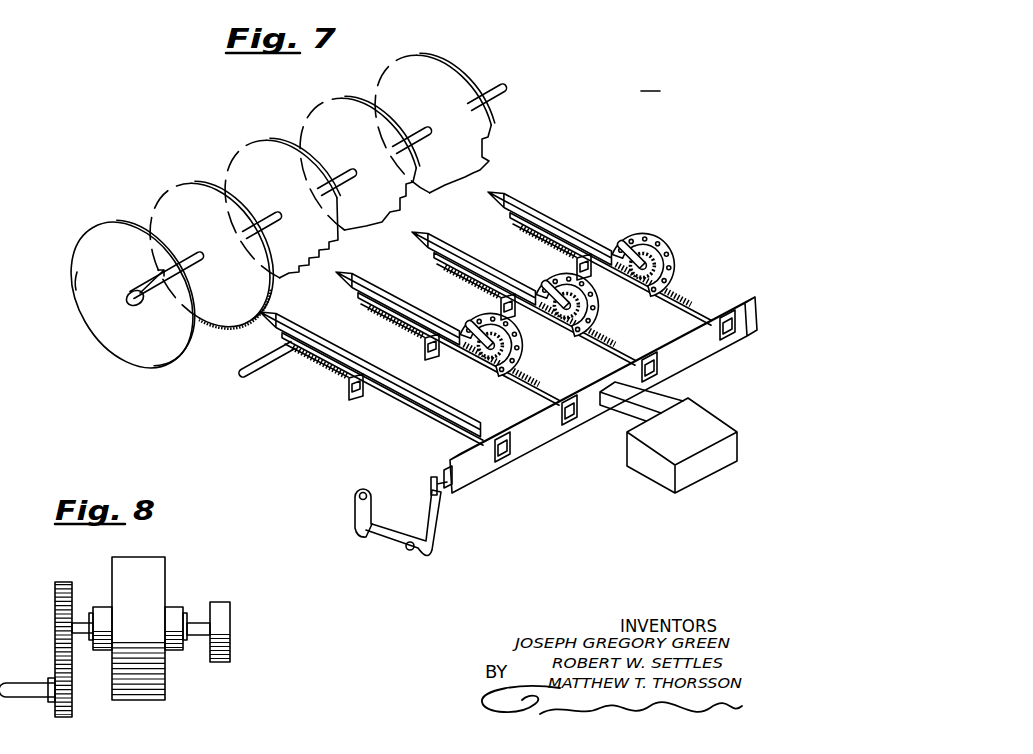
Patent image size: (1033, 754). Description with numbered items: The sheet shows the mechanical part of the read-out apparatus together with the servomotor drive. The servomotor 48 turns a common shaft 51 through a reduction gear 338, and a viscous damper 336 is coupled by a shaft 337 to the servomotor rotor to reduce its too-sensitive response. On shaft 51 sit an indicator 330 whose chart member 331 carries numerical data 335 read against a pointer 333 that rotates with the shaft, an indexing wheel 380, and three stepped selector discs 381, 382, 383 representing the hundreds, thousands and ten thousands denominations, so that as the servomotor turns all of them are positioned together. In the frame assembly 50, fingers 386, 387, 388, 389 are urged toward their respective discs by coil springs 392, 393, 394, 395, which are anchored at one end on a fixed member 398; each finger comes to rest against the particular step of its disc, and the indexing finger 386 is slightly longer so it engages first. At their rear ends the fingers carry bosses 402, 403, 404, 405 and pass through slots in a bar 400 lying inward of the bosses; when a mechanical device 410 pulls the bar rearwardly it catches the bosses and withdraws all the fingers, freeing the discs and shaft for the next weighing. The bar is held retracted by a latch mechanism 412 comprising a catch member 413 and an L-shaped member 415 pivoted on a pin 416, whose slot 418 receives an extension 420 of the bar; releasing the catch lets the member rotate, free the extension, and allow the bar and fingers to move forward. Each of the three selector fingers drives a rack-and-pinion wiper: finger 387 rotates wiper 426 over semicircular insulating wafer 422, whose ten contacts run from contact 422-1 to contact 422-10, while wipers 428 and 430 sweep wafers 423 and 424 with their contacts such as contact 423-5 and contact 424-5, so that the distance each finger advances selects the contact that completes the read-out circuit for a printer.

In FIG. 7, the indicator 330 is at (90, 213).
In FIG. 7, the chart member 331 is at (112, 224).
In FIG. 7, the pointer 333 is at (143, 302).
In FIG. 7, the numerical data 335 is at (77, 277).
In FIG. 7, the indexing wheel 380 is at (195, 183).
In FIG. 7, the stepped selector disc 381 is at (268, 142).
In FIG. 7, the stepped selector disc 382 is at (355, 99).
In FIG. 7, the stepped selector disc 383 is at (447, 58).
In FIG. 7, the shaft 51 is at (487, 88).
In FIG. 8, the shaft 51 is at (15, 683).
In FIG. 7, the servomotor 48 is at (584, 91).
In FIG. 8, the servomotor 48 is at (165, 562).
In FIG. 7, the fixed member 398 is at (244, 368).
In FIG. 7, the frame assembly 50 is at (290, 423).
In FIG. 7, the indexing finger 386 is at (490, 419).
In FIG. 7, the finger 387 is at (545, 397).
In FIG. 7, the finger 388 is at (620, 355).
In FIG. 7, the finger 389 is at (705, 315).
In FIG. 7, the coil spring 392 is at (348, 390).
In FIG. 7, the coil spring 393 is at (392, 323).
In FIG. 7, the coil spring 394 is at (470, 284).
In FIG. 7, the coil spring 395 is at (540, 240).
In FIG. 7, the semicircular insulating wafer 422 is at (527, 352).
In FIG. 7, the contact 422-1 is at (470, 325).
In FIG. 7, the contact 422-10 is at (540, 360).
In FIG. 7, the semicircular insulating wafer 423 is at (600, 312).
In FIG. 7, the contact 423-5 is at (598, 290).
In FIG. 7, the semicircular insulating wafer 424 is at (680, 265).
In FIG. 7, the contact 424-5 is at (690, 219).
In FIG. 7, the wiper 426 is at (470, 348).
In FIG. 7, the wiper 428 is at (548, 288).
In FIG. 7, the wiper 430 is at (620, 258).
In FIG. 7, the bar 400 is at (547, 432).
In FIG. 7, the boss 402 is at (505, 462).
In FIG. 7, the boss 403 is at (575, 425).
In FIG. 7, the boss 404 is at (660, 372).
In FIG. 7, the boss 405 is at (730, 340).
In FIG. 7, the mechanical device 410 is at (682, 494).
In FIG. 7, the latch mechanism 412 is at (393, 472).
In FIG. 7, the catch member 413 is at (356, 512).
In FIG. 7, the pivoted L-shaped member 415 is at (412, 560).
In FIG. 7, the pin 416 is at (406, 548).
In FIG. 7, the slot 418 is at (430, 477).
In FIG. 7, the extension 420 is at (449, 490).
In FIG. 8, the reduction gear 338 is at (57, 585).
In FIG. 8, the shaft 337 is at (200, 622).
In FIG. 8, the viscous damper 336 is at (228, 612).